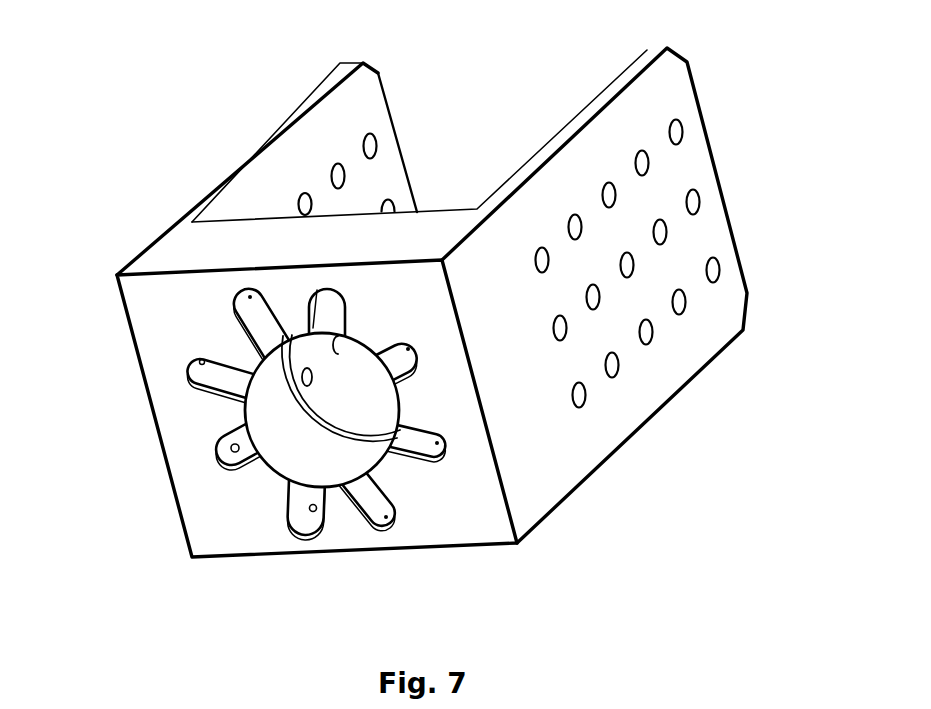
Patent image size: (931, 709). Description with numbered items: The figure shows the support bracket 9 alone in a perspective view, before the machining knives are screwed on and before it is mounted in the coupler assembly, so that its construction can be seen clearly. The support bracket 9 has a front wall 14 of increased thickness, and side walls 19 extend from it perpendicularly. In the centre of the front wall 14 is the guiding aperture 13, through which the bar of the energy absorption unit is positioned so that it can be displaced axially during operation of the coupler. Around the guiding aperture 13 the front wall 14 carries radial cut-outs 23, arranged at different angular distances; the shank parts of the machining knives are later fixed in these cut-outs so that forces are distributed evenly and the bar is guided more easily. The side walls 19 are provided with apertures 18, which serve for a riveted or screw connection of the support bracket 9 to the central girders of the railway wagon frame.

The support bracket 9 is at (477, 336).
The guiding aperture 13 is at (240, 329).
The front wall 14 is at (443, 507).
The apertures 18 is at (660, 232).
The side walls 19 is at (640, 279).
The radial cut-outs 23 is at (323, 303).